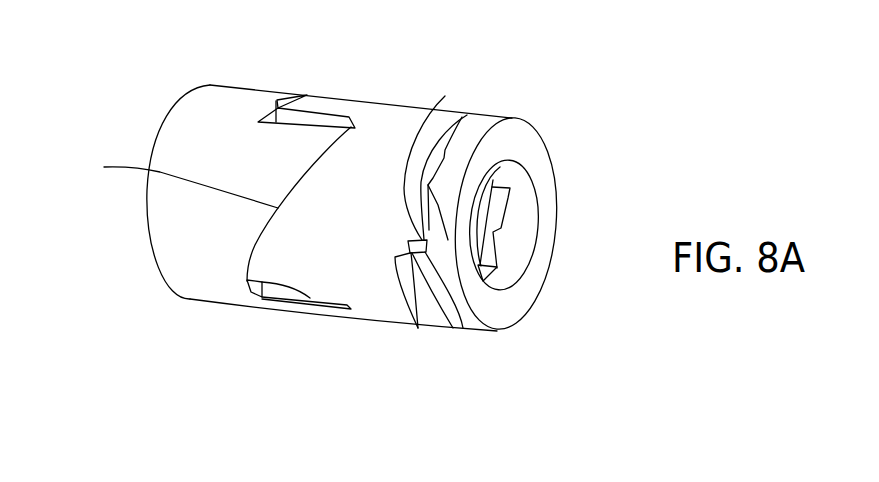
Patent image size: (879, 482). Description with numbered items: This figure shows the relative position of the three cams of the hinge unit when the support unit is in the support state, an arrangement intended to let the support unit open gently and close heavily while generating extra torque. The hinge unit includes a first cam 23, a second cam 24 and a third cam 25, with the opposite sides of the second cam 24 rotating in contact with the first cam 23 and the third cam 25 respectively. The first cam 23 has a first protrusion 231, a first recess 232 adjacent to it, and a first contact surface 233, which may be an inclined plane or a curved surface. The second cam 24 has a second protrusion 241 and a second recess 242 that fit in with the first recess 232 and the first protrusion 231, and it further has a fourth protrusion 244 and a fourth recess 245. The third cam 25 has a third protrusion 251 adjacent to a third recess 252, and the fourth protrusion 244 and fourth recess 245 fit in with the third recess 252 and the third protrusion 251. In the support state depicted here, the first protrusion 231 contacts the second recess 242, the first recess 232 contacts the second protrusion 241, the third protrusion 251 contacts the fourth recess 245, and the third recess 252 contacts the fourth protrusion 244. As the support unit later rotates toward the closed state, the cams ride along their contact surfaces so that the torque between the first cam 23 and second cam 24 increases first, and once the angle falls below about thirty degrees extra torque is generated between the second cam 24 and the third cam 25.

The first cam 23 is at (180, 228).
The first protrusion 231 is at (323, 138).
The first recess 232 is at (275, 103).
The first contact surface 233 is at (169, 180).
The second cam 24 is at (358, 303).
The second protrusion 241 is at (307, 97).
The second recess 242 is at (348, 118).
The fourth protrusion 244 is at (445, 96).
The fourth recess 245 is at (416, 300).
The third cam 25 is at (502, 312).
The third protrusion 251 is at (435, 302).
The third recess 252 is at (463, 328).